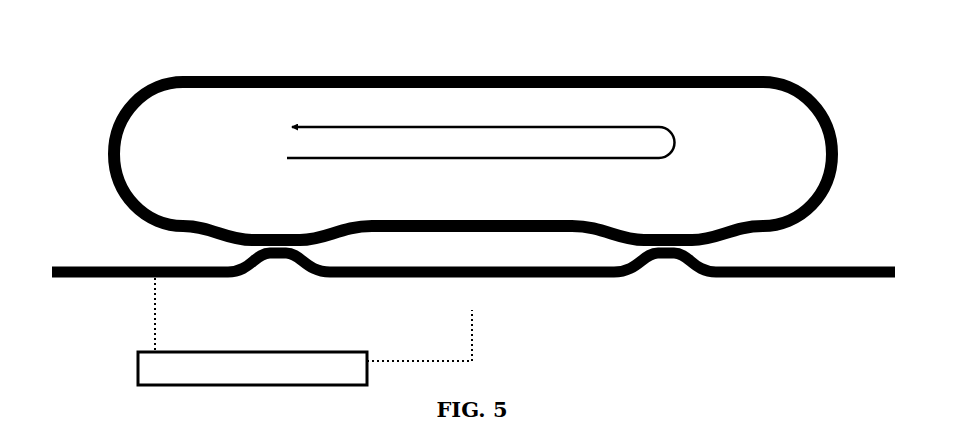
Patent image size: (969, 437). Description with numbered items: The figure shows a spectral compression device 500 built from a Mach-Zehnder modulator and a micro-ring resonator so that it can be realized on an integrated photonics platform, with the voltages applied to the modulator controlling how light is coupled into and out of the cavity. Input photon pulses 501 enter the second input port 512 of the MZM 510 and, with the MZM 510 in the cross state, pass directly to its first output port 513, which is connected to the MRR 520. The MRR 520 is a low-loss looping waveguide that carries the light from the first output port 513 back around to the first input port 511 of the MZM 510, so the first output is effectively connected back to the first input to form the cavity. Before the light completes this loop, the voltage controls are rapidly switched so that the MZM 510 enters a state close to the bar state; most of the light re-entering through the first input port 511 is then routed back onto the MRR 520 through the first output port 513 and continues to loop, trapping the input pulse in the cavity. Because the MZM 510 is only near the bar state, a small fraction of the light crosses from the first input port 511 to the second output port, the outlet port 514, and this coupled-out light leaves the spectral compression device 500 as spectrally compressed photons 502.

The spectral compression device 500 is at (794, 69).
The input photon pulses 501 is at (244, 314).
The spectrally compressed photons 502 is at (825, 276).
The MZM 510 is at (472, 249).
The first input port 511 is at (227, 221).
The input port 512 is at (227, 278).
The output port 513 is at (720, 221).
The outlet port 514 is at (716, 273).
The MRR 520 is at (481, 142).